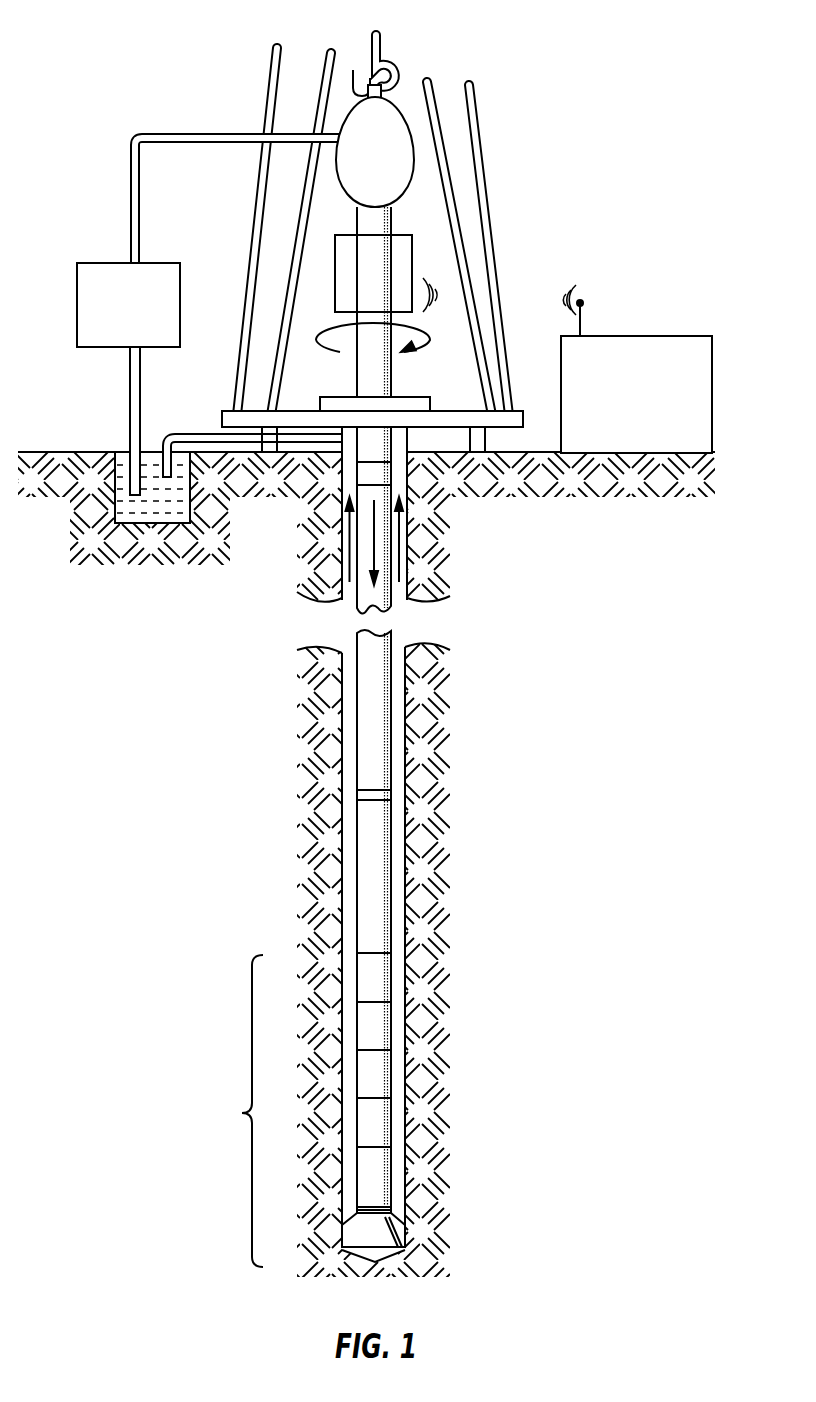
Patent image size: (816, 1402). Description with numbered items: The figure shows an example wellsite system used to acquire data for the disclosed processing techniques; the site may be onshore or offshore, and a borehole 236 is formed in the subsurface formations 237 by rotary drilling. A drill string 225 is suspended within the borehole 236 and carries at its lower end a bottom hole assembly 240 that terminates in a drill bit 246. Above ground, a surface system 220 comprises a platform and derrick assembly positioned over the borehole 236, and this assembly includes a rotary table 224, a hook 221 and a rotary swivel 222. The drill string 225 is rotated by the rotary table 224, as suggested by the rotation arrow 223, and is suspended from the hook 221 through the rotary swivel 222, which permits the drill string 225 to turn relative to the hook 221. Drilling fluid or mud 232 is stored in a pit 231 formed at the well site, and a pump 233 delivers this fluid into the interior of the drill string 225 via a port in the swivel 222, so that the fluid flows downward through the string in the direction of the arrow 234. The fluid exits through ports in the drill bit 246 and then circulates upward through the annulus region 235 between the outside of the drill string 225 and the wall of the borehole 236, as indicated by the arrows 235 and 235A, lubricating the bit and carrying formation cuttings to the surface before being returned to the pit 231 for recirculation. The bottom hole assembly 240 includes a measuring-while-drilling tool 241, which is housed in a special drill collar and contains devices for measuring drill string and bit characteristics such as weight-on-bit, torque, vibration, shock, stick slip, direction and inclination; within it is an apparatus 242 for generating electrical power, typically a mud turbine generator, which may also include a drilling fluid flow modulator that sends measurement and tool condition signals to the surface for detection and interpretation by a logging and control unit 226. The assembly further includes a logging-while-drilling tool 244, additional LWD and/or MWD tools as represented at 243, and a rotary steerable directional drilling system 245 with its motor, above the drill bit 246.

The surface system 220 is at (497, 155).
The hook 221 is at (382, 42).
The rotary swivel 222 is at (357, 172).
The rotary table rotation 223 is at (370, 373).
The rotary table 224 is at (398, 435).
The drill string 225 is at (362, 428).
The logging and control unit 226 is at (613, 334).
The pit 231 is at (150, 517).
The drilling fluid or mud 232 is at (117, 440).
The pump 233 is at (97, 350).
The directional arrow 234 is at (392, 553).
The annulus region 235 is at (345, 550).
The directional arrow 235A is at (409, 528).
The borehole 236 is at (428, 399).
The formation 237 is at (435, 718).
The bottom hole assembly 240 is at (228, 1111).
The measuring-while-drilling tool 241 is at (373, 977).
The power generating apparatus 242 is at (373, 1025).
The additional LWD and/or MWD tool 243 is at (373, 1073).
The logging-while-drilling tool 244 is at (373, 1123).
The rotary steerable directional drilling system 245 is at (373, 1172).
The drill bit 246 is at (373, 1228).